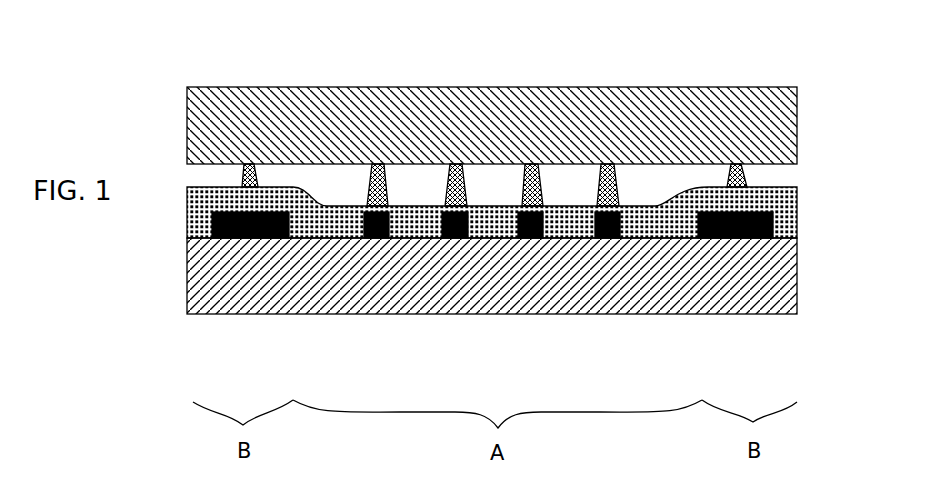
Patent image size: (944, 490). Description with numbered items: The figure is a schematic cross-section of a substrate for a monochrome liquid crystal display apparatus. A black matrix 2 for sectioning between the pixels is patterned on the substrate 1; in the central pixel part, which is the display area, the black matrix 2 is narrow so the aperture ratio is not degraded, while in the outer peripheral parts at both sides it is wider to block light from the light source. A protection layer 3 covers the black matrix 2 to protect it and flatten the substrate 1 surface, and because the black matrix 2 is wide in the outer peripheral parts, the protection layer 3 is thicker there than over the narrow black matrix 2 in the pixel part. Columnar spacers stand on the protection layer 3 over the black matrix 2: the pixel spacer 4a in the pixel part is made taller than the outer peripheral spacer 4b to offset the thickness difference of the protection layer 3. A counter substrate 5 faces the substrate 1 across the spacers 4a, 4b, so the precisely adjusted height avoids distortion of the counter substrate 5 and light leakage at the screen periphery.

The substrate 1 is at (787, 268).
The black matrix 2 is at (255, 238).
The protection layer 3 is at (777, 200).
The pixel spacer 4a is at (375, 164).
The outer peripheral spacer 4b is at (247, 164).
The counter substrate 5 is at (773, 120).